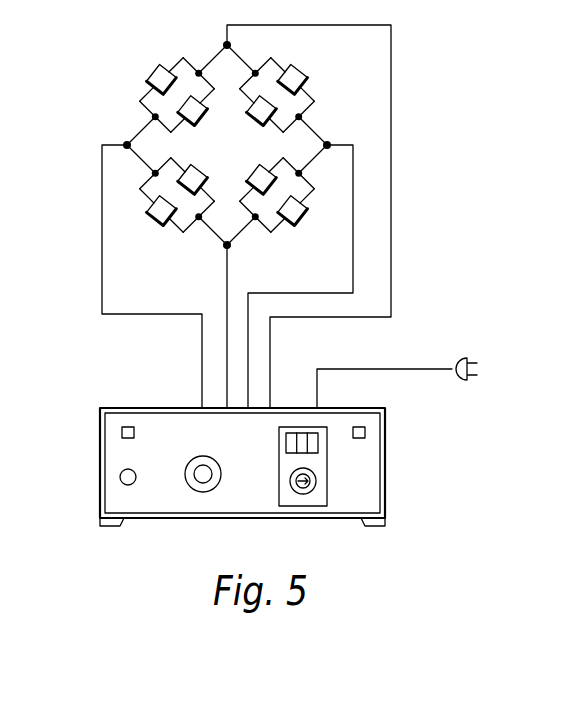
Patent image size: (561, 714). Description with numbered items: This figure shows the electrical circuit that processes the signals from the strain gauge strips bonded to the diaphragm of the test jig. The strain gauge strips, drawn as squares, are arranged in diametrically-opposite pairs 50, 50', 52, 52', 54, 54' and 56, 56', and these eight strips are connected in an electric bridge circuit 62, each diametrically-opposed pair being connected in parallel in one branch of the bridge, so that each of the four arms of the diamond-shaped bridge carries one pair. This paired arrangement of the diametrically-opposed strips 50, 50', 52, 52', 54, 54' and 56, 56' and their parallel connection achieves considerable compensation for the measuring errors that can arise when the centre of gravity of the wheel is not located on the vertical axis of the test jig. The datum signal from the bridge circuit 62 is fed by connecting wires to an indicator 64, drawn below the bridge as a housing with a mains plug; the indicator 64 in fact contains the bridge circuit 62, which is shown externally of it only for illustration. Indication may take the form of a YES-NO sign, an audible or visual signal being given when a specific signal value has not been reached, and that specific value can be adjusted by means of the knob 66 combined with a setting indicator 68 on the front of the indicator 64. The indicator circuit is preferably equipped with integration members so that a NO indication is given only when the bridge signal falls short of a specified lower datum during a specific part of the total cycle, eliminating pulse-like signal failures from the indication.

The strain gauge strip 50 is at (133, 61).
The strain gauge strip 50' is at (146, 97).
The strain gauge strip 52 is at (329, 79).
The strain gauge strip 52' is at (314, 112).
The strain gauge strip 54 is at (379, 210).
The strain gauge strip 54' is at (368, 178).
The strain gauge strip 56 is at (125, 175).
The strain gauge strip 56' is at (116, 207).
The electric bridge circuit 62 is at (281, 57).
The indicator 64 is at (367, 422).
The knob 66 is at (317, 481).
The setting indicator 68 is at (325, 448).